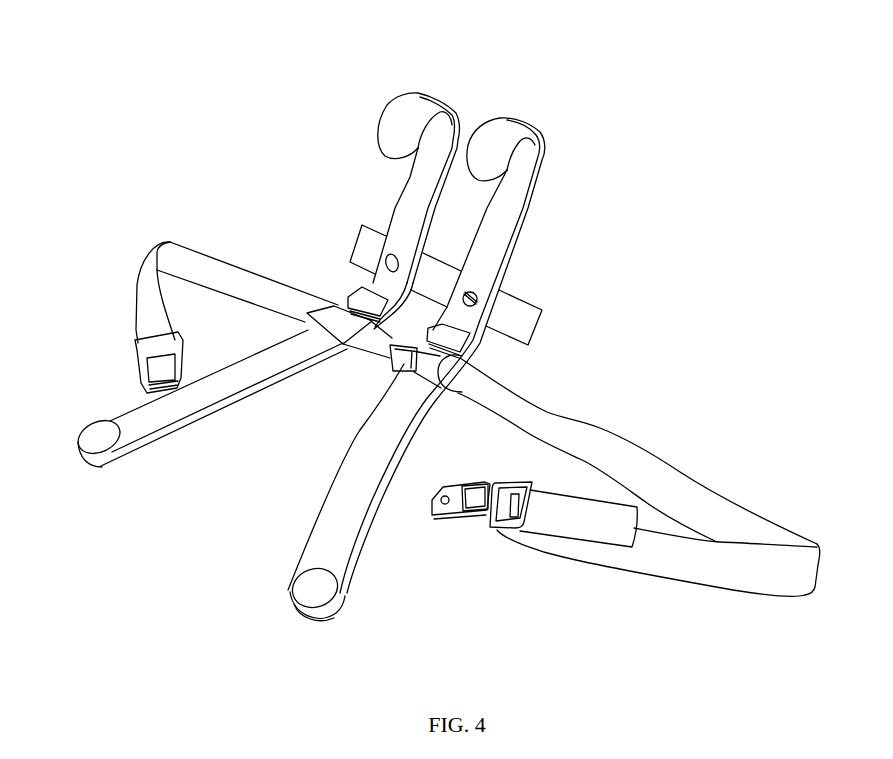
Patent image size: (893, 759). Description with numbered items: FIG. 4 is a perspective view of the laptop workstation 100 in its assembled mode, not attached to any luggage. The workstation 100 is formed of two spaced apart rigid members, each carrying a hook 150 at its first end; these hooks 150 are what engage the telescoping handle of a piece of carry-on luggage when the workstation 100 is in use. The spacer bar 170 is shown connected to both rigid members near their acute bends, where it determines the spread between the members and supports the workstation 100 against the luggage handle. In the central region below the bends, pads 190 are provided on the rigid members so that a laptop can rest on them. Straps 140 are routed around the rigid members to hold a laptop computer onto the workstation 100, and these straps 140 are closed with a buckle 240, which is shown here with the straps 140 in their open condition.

The laptop workstation 100 is at (381, 70).
The straps 140 is at (568, 430).
The hooks 150 is at (510, 130).
The spacer bar 170 is at (528, 313).
The pads 190 is at (100, 435).
The buckle 240 is at (463, 497).